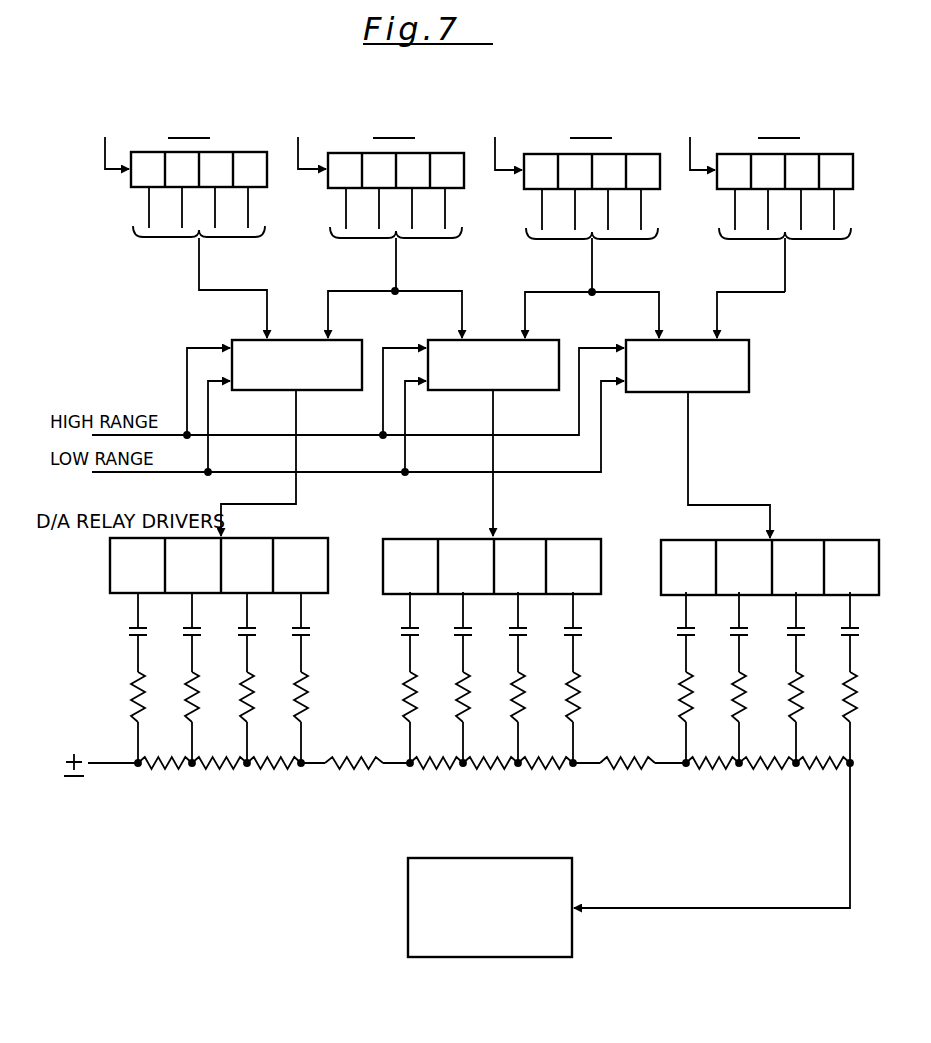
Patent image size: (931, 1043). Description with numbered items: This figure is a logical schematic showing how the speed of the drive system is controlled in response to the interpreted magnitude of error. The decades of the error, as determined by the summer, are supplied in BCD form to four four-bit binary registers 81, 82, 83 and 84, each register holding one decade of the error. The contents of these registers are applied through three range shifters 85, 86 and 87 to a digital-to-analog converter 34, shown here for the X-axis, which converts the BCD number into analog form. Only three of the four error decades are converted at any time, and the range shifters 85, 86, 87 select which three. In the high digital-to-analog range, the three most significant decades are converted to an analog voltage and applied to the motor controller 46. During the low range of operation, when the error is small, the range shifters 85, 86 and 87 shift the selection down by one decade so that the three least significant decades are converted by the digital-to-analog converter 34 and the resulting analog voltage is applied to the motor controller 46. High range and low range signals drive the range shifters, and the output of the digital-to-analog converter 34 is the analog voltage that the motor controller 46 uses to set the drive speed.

The four-bit binary register 81 is at (130, 190).
The four-bit binary register 82 is at (332, 190).
The four-bit binary register 83 is at (528, 191).
The four-bit binary register 84 is at (722, 191).
The range shifter 85 is at (358, 343).
The range shifter 86 is at (556, 343).
The range shifter 87 is at (746, 343).
The digital-to-analog converter 34 is at (120, 653).
The motor controller 46 is at (578, 872).